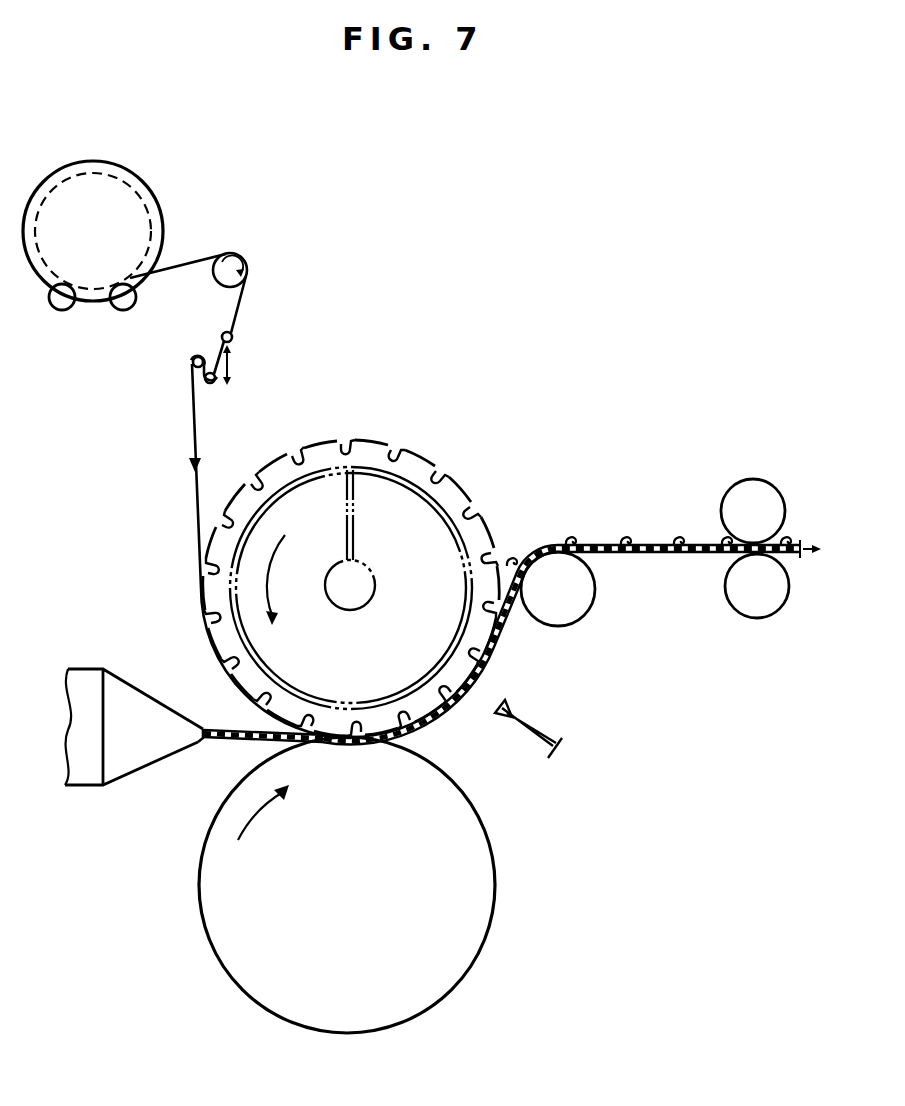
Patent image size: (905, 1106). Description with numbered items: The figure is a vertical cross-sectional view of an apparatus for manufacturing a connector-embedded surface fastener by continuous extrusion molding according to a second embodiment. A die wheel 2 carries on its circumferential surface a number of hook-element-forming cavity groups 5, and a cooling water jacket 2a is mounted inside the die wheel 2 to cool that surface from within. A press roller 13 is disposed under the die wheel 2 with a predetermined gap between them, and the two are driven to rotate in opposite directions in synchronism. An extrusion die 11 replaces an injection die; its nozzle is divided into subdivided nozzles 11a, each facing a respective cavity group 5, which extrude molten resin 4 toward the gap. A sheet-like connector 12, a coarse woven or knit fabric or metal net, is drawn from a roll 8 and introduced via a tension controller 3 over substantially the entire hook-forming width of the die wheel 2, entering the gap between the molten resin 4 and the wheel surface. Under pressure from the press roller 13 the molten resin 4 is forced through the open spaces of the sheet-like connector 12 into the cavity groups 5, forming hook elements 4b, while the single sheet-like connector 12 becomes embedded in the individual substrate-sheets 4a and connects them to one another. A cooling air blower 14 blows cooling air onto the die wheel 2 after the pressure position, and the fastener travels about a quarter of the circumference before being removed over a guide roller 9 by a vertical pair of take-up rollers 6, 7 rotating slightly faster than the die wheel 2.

The die wheel 2 is at (370, 452).
The cooling water jacket 2a is at (457, 483).
The tension controller 3 is at (252, 342).
The molten resin 4 is at (245, 728).
The substrate-sheet 4a is at (653, 555).
The hook element 4b is at (683, 533).
The hook-element-forming cavity group 5 is at (352, 439).
The take-up roller 6 is at (750, 500).
The take-up roller 7 is at (755, 592).
The roll 8 is at (160, 207).
The guide roller 9 is at (568, 602).
The extrusion die 11 is at (128, 712).
The nozzle 11a is at (200, 742).
The sheet-like connector 12 is at (240, 294).
The press roller 13 is at (243, 933).
The cooling air blower 14 is at (532, 723).